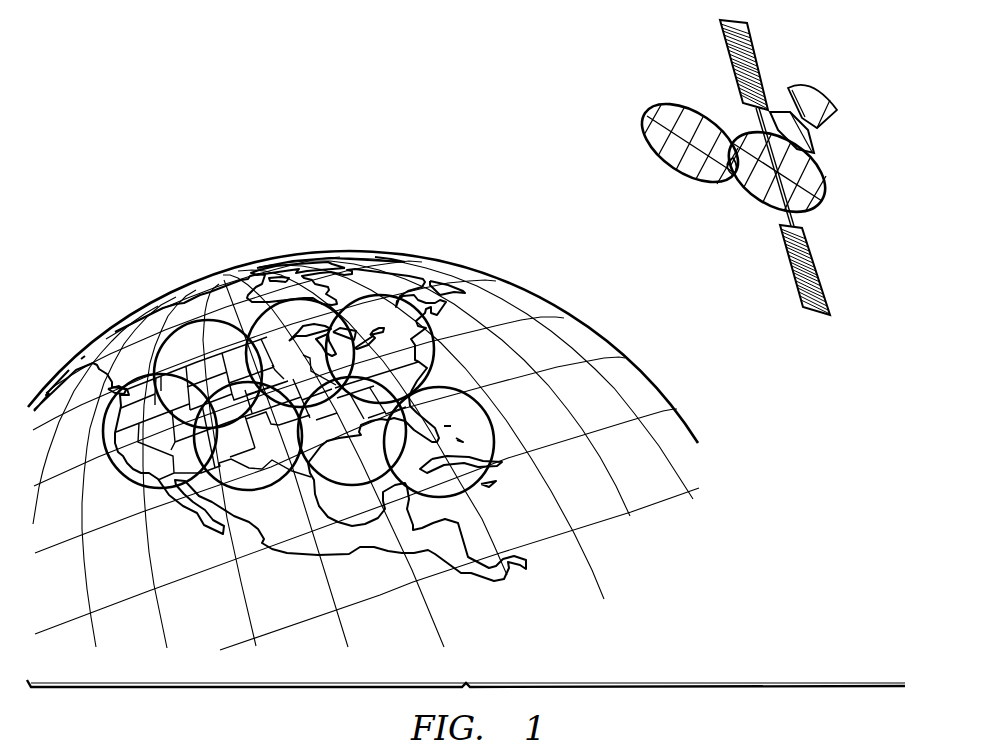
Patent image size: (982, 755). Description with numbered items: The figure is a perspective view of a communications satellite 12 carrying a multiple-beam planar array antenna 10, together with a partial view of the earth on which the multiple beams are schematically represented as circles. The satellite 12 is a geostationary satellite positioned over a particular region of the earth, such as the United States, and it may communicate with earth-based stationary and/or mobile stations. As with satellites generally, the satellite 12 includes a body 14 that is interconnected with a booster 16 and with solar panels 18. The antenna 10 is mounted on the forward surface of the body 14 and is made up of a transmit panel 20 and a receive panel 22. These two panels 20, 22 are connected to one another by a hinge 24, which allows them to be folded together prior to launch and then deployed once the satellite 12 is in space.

The multiple-beam planar array antenna 10 is at (718, 107).
The communications satellite 12 is at (846, 199).
The body 14 is at (816, 142).
The booster 16 is at (818, 95).
The solar panels 18 is at (753, 43).
The transmit panel 20 is at (770, 200).
The receive panel 22 is at (650, 107).
The hinge 24 is at (732, 175).